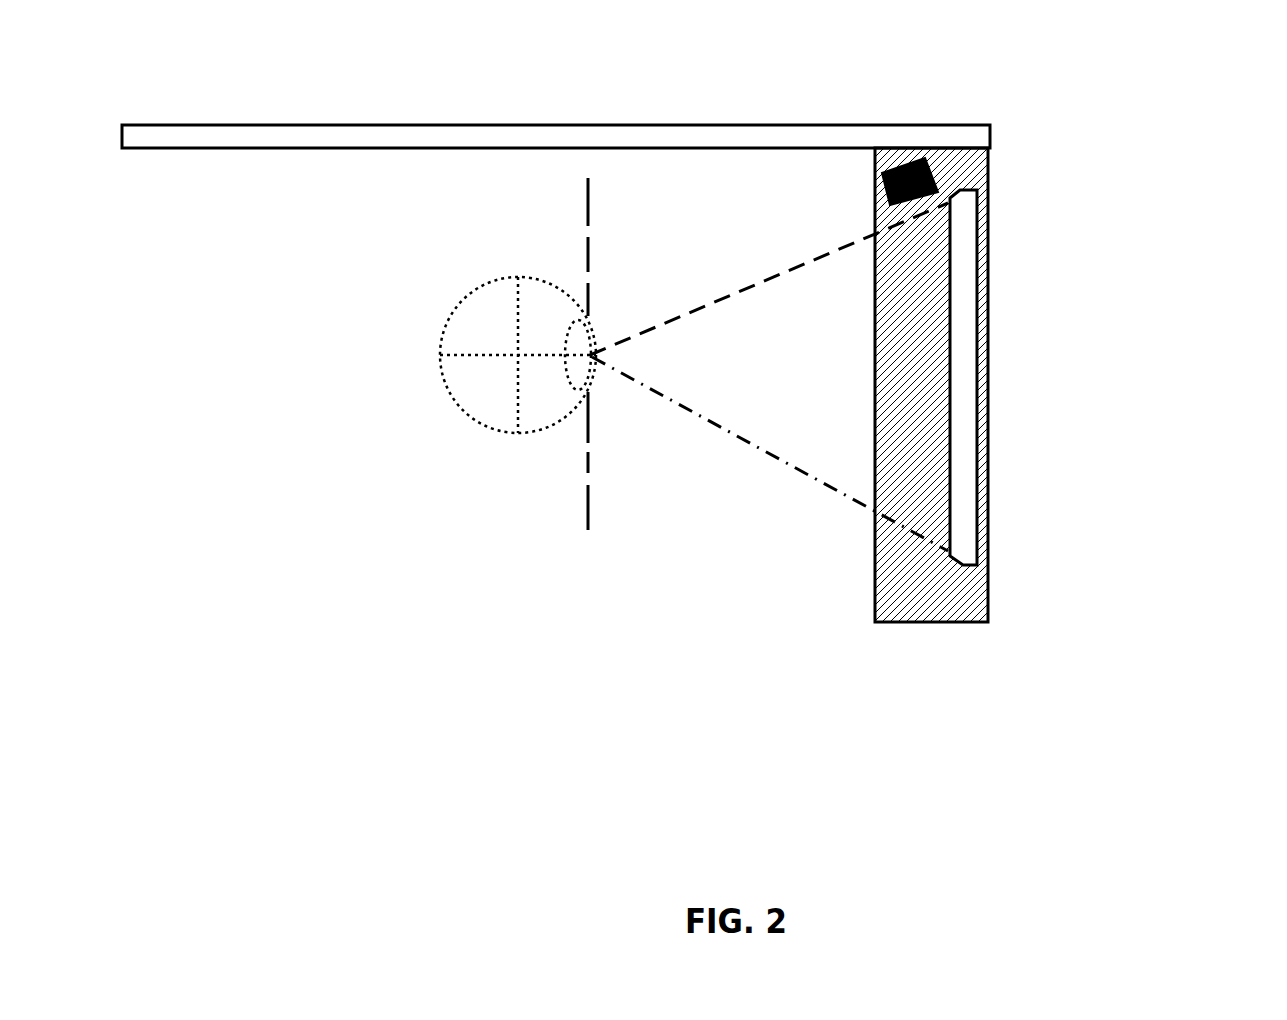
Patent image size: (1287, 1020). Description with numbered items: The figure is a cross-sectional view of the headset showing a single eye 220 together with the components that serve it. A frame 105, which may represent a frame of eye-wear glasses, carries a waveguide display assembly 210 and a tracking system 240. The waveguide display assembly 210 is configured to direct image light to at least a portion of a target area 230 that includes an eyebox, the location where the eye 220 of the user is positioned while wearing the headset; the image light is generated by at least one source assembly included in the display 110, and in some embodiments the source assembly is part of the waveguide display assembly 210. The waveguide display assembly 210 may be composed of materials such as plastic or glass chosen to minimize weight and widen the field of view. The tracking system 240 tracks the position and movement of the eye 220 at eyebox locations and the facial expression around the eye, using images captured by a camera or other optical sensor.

The frame 105 is at (843, 124).
The display 110 is at (988, 500).
The waveguide display assembly 210 is at (960, 265).
The eye 220 is at (478, 288).
The target area 230 is at (585, 453).
The tracking system 240 is at (935, 176).